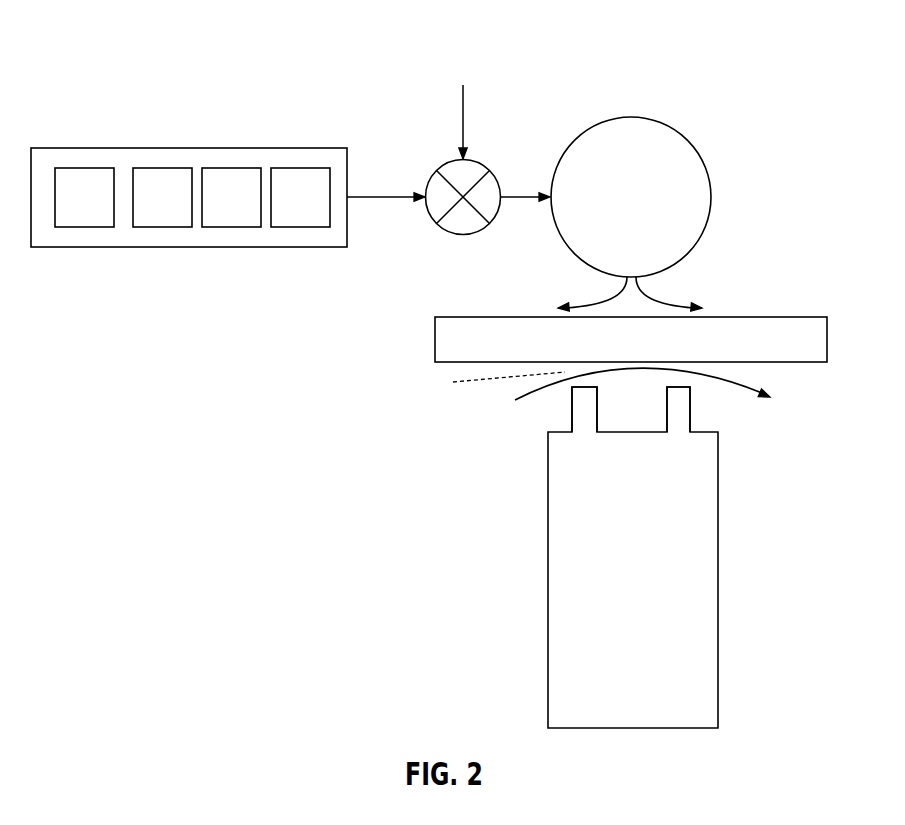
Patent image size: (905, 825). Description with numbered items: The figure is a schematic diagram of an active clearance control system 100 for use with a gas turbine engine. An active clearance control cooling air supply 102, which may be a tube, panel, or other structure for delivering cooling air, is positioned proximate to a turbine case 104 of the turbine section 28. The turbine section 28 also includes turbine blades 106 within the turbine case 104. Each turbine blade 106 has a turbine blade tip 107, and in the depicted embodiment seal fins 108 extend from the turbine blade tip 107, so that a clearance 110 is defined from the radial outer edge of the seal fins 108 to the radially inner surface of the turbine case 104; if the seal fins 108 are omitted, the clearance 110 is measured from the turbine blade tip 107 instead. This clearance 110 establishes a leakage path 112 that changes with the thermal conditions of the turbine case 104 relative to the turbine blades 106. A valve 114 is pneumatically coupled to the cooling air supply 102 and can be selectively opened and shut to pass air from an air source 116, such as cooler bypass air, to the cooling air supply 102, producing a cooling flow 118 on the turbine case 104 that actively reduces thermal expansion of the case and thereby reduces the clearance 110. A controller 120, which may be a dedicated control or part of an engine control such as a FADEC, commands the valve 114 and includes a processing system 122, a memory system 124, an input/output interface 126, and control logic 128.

The active clearance control system 100 is at (104, 58).
The controller 120 is at (183, 248).
The processing system 122 is at (104, 210).
The memory system 124 is at (182, 210).
The input/output interface 126 is at (251, 210).
The control logic 128 is at (320, 210).
The valve 114 is at (427, 211).
The air source 116 is at (467, 113).
The active clearance control cooling air supply 102 is at (651, 210).
The turbine section 28 is at (776, 220).
The cooling flow 118 is at (672, 306).
The turbine case 104 is at (827, 333).
The leakage path 112 is at (518, 400).
The clearance 110 is at (462, 383).
The turbine blades 106 is at (548, 552).
The turbine blade tip 107 is at (560, 432).
The seal fins 108 is at (690, 408).